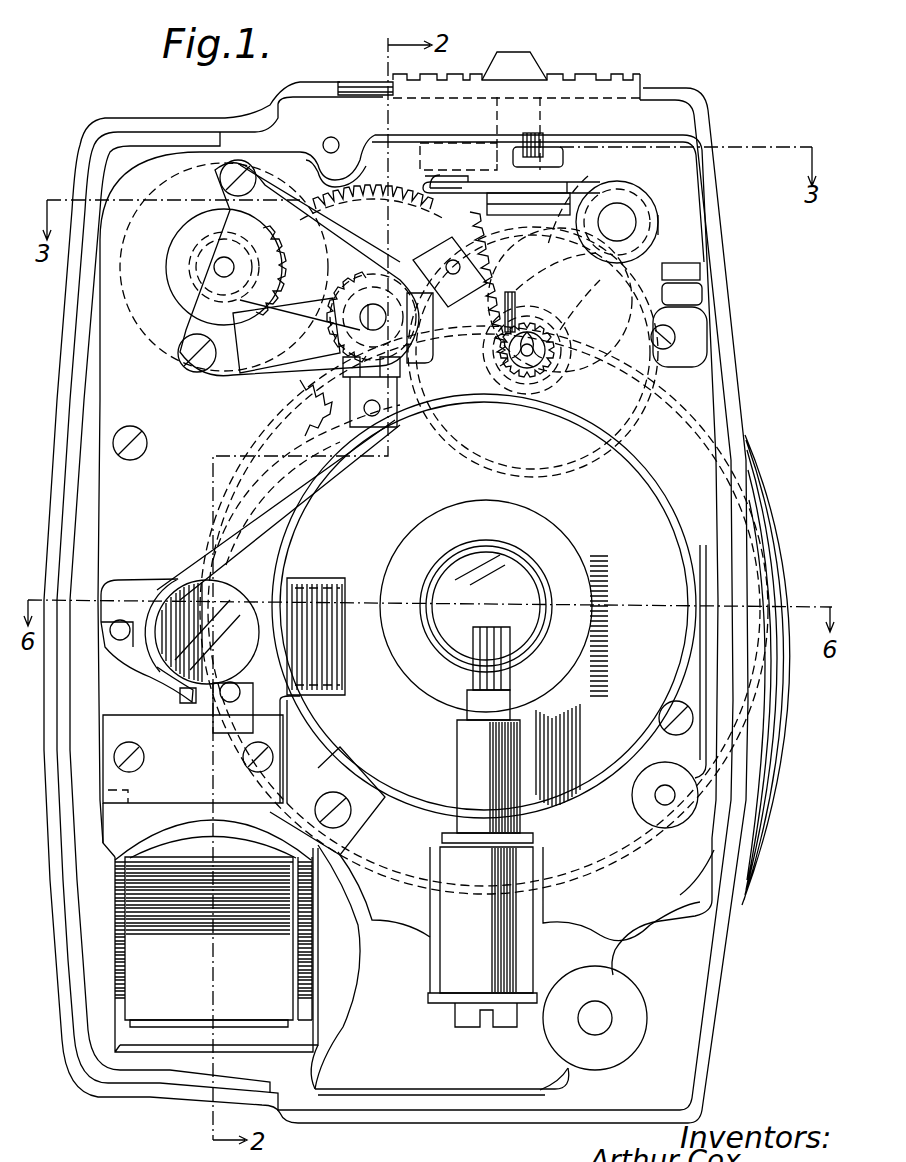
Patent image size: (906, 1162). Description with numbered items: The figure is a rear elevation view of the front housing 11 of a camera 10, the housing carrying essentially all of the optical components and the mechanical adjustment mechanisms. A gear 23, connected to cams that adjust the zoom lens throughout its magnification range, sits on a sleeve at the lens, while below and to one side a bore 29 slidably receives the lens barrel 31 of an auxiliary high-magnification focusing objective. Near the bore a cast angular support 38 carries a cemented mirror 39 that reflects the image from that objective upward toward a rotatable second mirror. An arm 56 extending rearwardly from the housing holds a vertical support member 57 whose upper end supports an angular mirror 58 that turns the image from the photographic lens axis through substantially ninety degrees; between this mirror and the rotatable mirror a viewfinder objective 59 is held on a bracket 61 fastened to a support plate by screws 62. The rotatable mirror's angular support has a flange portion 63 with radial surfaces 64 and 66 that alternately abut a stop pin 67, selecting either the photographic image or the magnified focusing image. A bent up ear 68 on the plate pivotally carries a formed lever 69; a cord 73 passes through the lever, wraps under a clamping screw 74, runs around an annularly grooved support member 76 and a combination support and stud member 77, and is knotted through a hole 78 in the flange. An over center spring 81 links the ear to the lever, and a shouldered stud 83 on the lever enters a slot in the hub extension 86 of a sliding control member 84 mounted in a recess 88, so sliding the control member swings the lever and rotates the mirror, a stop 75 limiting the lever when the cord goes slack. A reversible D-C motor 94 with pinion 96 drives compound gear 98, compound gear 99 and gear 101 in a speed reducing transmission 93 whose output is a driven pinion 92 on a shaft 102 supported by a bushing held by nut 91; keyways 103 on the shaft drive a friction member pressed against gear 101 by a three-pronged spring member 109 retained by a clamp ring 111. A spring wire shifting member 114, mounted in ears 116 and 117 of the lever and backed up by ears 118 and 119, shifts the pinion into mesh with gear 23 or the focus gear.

The camera 10 is at (760, 436).
The front housing 11 is at (745, 385).
The gear 23 is at (750, 406).
The bore 29 is at (188, 826).
The lens barrel 31 is at (157, 843).
The cast angular support 38 is at (110, 883).
The mirror 39 is at (284, 913).
The arm 56 is at (432, 974).
The vertical support member 57 is at (470, 774).
The angular mirror 58 is at (480, 627).
The viewfinder objective 59 is at (344, 574).
The bracket 61 is at (290, 765).
The screws 62 is at (240, 756).
The flange portion 63 is at (160, 580).
The radial surface 64 is at (120, 645).
The radial surface 66 is at (220, 718).
The stop pin 67 is at (160, 672).
The bent up ear 68 is at (486, 258).
The formed lever 69 is at (548, 272).
The cord 73 is at (588, 176).
The clamping screw 74 is at (562, 150).
The stop 75 is at (570, 186).
The annularly grooved support member 76 is at (642, 210).
The combination annularly grooved support and stud member 77 is at (556, 318).
The hole 78 is at (200, 700).
The over center spring 81 is at (426, 187).
The shouldered stud 83 is at (540, 140).
The sliding control member 84 is at (533, 78).
The hub extension 86 is at (495, 148).
The recess 88 is at (372, 82).
The nut 91 is at (224, 590).
The driven pinion 92 is at (360, 268).
The power driven speed reducing gear transmission 93 is at (317, 187).
The reversible D-C motor 94 is at (147, 340).
The pinion 96 is at (200, 258).
The compound gear 98 is at (392, 222).
The compound gear 99 is at (676, 336).
The gear 101 is at (308, 434).
The shaft 102 is at (433, 330).
The keyways 103 is at (330, 318).
The three-pronged spring member 109 is at (384, 445).
The clamp ring 111 is at (354, 384).
The spring wire shifting member 114 is at (556, 280).
The ear 116 is at (516, 292).
The ear 117 is at (585, 280).
The ear 118 is at (372, 209).
The ear 119 is at (452, 188).